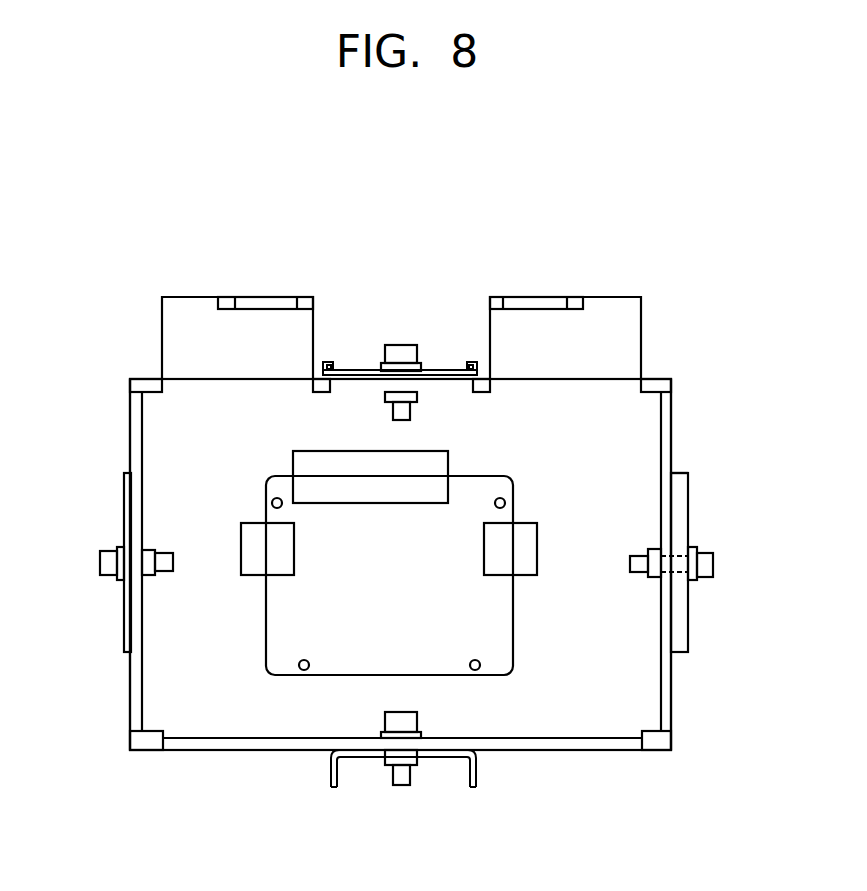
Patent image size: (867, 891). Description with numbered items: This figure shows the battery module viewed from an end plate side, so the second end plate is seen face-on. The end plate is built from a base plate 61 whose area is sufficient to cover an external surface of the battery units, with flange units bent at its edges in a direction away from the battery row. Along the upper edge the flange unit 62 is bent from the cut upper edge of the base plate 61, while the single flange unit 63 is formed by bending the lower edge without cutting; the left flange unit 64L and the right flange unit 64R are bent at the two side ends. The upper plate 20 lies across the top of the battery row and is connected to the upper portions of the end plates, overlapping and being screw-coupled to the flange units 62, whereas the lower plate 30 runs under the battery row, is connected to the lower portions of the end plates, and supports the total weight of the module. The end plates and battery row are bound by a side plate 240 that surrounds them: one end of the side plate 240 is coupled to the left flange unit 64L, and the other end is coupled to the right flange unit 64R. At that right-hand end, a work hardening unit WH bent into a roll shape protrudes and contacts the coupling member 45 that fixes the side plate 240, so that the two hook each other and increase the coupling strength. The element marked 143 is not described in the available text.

The upper plate 20 is at (479, 378).
The lower plate 30 is at (443, 757).
The coupling member 45 is at (708, 562).
The base plate 61 is at (218, 712).
The flange unit 62 is at (363, 380).
The flange unit 63 is at (245, 745).
The left flange unit 64L is at (137, 414).
The right flange unit 64R is at (665, 415).
The shaft 143 is at (400, 350).
The side plate 240 is at (124, 634).
The work hardening unit WH is at (683, 517).